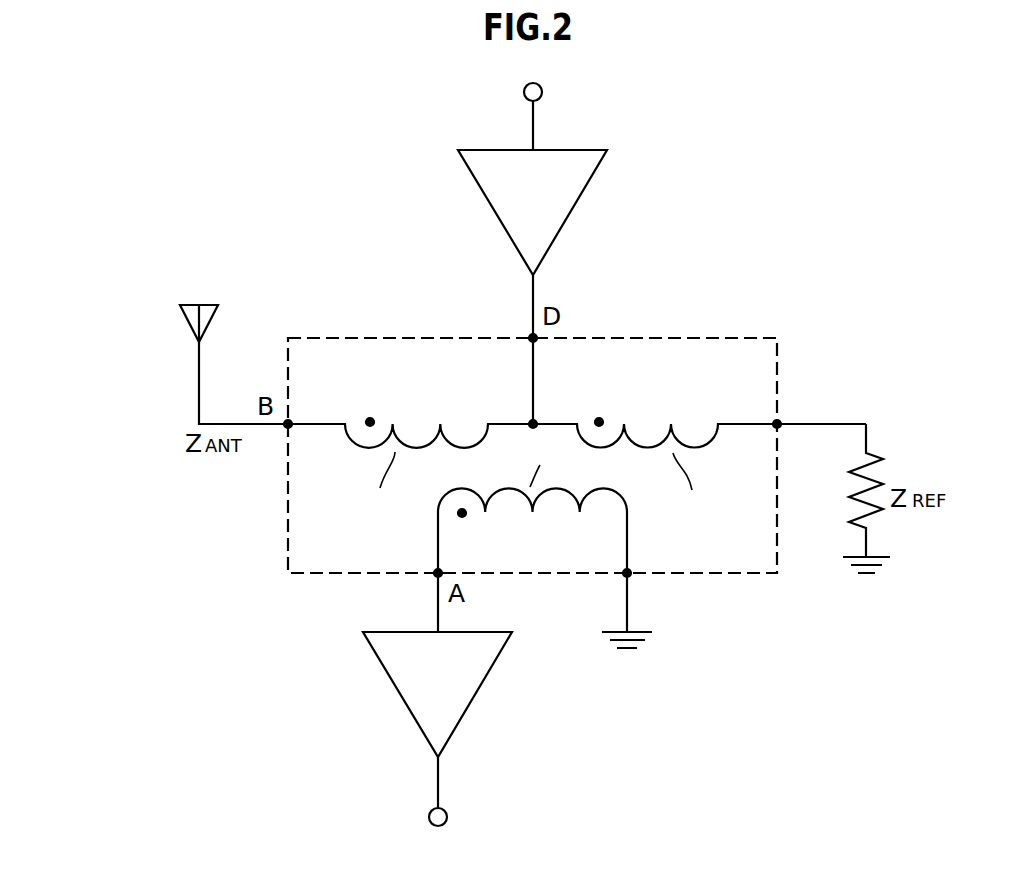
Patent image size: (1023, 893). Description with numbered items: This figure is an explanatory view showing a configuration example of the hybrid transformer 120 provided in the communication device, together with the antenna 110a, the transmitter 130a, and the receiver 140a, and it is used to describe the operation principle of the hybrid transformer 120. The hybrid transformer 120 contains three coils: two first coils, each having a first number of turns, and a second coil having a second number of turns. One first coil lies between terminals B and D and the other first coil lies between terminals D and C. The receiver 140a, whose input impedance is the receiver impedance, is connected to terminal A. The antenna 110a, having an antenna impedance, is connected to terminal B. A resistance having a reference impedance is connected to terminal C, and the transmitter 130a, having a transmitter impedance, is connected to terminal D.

The antenna 110a is at (190, 325).
The hybrid transformer 120 is at (682, 337).
The transmitter 130a is at (587, 188).
The receiver 140a is at (460, 722).